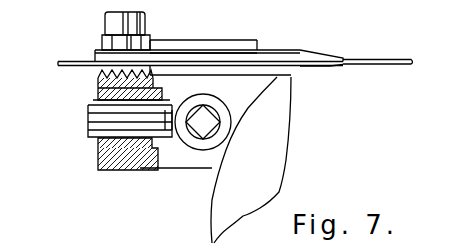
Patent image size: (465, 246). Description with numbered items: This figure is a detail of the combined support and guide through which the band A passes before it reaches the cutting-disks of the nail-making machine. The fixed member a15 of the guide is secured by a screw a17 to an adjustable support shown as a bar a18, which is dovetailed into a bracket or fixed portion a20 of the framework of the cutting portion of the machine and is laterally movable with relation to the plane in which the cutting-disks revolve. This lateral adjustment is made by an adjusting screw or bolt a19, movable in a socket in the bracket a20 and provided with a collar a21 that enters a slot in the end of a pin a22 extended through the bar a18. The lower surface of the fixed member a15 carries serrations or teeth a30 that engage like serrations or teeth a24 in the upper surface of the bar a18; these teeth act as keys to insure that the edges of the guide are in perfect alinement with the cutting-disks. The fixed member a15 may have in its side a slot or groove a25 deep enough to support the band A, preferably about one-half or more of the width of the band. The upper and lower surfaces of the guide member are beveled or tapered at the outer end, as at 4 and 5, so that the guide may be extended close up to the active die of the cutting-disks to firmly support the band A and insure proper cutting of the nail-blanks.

The fixed member a15 is at (100, 53).
The screw a17 is at (115, 22).
The bar a18 is at (100, 153).
The adjusting screw or bolt a19 is at (193, 130).
The bracket or fixed portion a20 is at (193, 167).
The collar a21 is at (225, 126).
The pin a22 is at (90, 119).
The serrations or teeth a24 is at (100, 82).
The slot or groove a25 is at (288, 62).
The serrations or teeth a30 is at (140, 77).
The beveled or tapered surface 4 is at (320, 50).
The beveled or tapered surface 5 is at (345, 83).
The band A is at (386, 59).